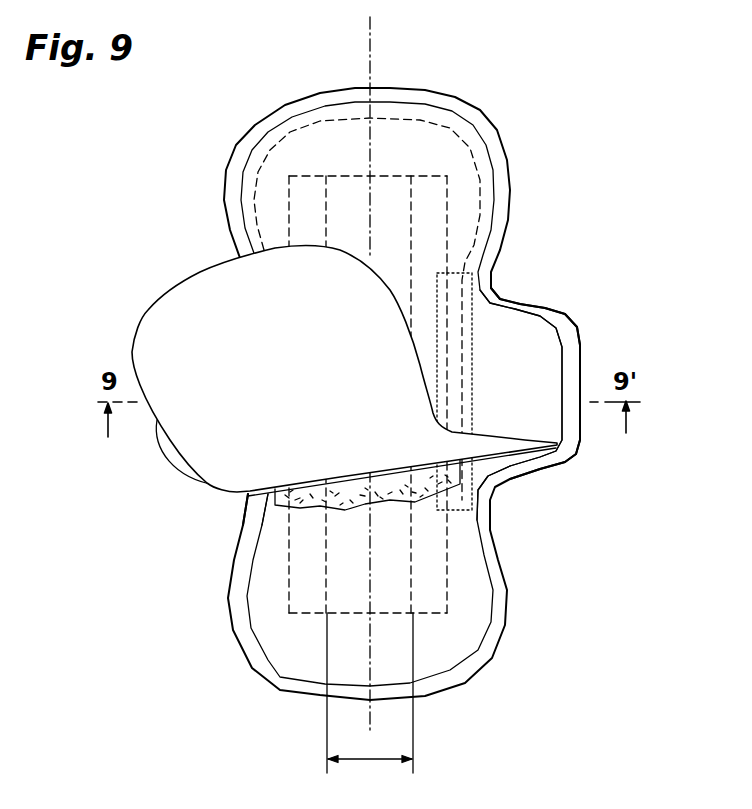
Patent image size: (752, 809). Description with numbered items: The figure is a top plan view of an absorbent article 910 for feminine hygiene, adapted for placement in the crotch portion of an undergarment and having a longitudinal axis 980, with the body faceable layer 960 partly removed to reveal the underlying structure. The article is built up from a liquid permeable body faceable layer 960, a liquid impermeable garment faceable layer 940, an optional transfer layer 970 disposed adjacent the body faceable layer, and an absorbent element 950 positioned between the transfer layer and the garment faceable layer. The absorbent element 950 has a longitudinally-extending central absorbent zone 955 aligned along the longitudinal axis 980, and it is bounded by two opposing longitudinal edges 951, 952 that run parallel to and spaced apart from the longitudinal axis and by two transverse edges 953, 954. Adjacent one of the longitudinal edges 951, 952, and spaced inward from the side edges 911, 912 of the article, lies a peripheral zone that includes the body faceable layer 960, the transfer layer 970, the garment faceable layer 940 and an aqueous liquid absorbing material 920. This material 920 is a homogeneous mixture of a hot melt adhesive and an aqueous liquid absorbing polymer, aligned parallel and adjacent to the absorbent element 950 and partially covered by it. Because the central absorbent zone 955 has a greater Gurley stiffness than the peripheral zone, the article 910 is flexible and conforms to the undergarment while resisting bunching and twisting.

The absorbent article 910 is at (179, 200).
The side edge 911 is at (493, 502).
The side edge 912 is at (243, 525).
The aqueous liquid absorbing material 920 is at (457, 503).
The garment faceable layer 940 is at (513, 460).
The absorbent element 950 is at (437, 585).
The longitudinal edge 951 is at (447, 560).
The longitudinal edge 952 is at (288, 563).
The transverse edge 953 is at (397, 613).
The transverse edge 954 is at (408, 173).
The central absorbent zone 955 is at (368, 762).
The body faceable layer 960 is at (158, 329).
The transfer layer 970 is at (338, 483).
The longitudinal axis 980 is at (368, 33).